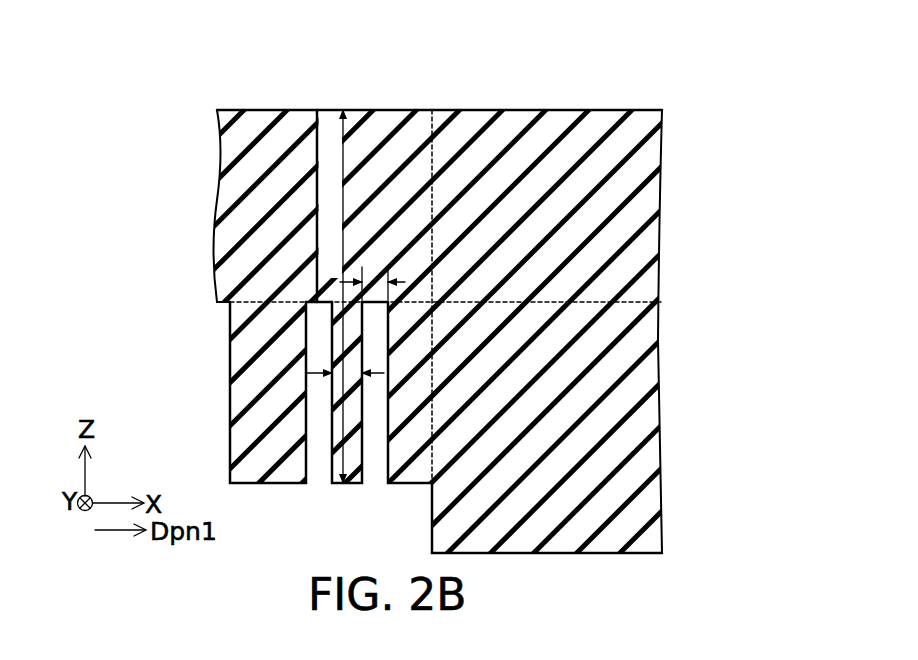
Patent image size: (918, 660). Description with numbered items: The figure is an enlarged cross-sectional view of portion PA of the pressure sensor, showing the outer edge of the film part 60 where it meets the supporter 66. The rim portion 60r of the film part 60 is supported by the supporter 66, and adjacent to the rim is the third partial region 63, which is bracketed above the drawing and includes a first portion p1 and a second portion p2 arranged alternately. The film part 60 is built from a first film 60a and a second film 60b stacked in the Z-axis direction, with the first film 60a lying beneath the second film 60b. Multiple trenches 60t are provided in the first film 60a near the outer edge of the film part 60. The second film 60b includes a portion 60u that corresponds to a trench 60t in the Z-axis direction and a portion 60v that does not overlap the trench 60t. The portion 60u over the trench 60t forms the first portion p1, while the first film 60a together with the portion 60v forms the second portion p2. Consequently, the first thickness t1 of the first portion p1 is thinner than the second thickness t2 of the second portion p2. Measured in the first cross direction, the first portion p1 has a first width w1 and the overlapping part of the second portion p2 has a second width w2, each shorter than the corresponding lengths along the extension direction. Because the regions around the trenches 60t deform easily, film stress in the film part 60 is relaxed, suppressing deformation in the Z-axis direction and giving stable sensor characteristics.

The film part 60 is at (90, 235).
The first film 60a is at (272, 386).
The second film 60b is at (155, 223).
The portion of the second film corresponding to the trench 60u is at (313, 263).
The portion of the second film not overlapping the trench 60v is at (293, 287).
The trench 60t is at (334, 447).
The rim portion 60r is at (433, 243).
The third partial region 63 is at (448, 65).
The supporter 66 is at (578, 173).
The portion PA is at (666, 97).
The first portion p1 is at (311, 158).
The second portion p2 is at (331, 152).
The first thickness t1 is at (320, 203).
The second thickness t2 is at (347, 203).
The first width w1 is at (378, 300).
The second width w2 is at (352, 375).